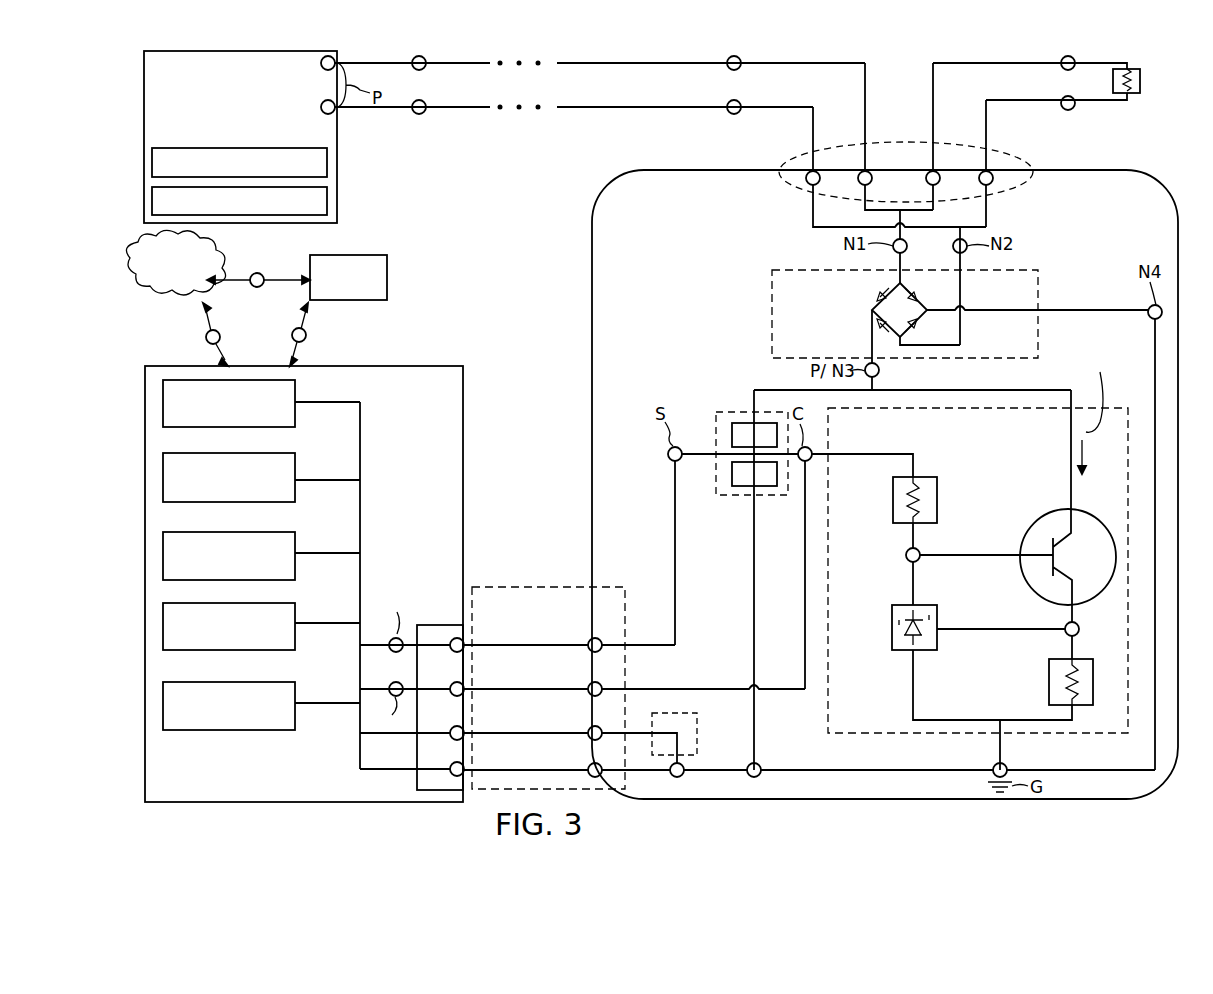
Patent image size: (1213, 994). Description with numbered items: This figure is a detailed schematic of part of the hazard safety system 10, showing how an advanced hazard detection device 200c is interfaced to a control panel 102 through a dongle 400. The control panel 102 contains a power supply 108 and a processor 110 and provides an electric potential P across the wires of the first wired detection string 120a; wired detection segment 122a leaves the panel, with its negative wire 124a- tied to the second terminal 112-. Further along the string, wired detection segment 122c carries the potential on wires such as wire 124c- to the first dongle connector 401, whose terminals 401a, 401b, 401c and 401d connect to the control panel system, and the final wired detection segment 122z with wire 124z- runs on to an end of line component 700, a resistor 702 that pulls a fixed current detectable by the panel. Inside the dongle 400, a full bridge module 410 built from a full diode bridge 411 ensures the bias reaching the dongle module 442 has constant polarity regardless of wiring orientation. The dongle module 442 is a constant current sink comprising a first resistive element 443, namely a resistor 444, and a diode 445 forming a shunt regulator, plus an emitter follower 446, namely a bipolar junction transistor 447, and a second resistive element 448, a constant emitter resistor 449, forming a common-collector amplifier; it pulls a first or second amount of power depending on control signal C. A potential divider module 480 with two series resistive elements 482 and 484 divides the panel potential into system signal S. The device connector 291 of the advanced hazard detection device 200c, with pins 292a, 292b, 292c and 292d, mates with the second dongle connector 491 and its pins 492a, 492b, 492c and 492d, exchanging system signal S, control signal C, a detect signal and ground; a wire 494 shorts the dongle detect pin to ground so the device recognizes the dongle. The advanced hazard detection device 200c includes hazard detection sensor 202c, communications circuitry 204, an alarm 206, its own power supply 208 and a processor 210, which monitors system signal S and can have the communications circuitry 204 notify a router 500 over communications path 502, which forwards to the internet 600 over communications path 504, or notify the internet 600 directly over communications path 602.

The hazard safety system 10 is at (1172, 813).
The control panel 102 is at (240, 137).
The processor 110 is at (239, 162).
The power supply 108 is at (239, 201).
The second terminal 112- is at (320, 112).
The wired detection segment 122a is at (427, 60).
The second wire 124a- is at (426, 112).
The wired detection segment 122c is at (756, 59).
The wire 124c- is at (741, 102).
The final wired detection segment 122z is at (1088, 59).
The wire 124z- is at (1085, 91).
The end of line component 700 is at (1140, 72).
The resistor 702 is at (1132, 93).
The first wired detection string 120a is at (1172, 55).
The dongle 400 is at (593, 184).
The first dongle connector 401 is at (929, 151).
The dongle connector terminal 401a is at (807, 171).
The dongle connector terminal 401b is at (863, 170).
The dongle connector terminal 401c is at (931, 170).
The dongle connector terminal 401d is at (984, 170).
The full bridge module 410 is at (925, 292).
The full diode bridge 411 is at (872, 309).
The potential divider module 480 is at (734, 569).
The resistive element 482 is at (754, 435).
The resistive element 484 is at (754, 474).
The dongle module 442 is at (984, 561).
The first resistive element 443 is at (920, 479).
The resistor 444 is at (907, 500).
The diode 445 is at (930, 608).
The emitter follower 446 is at (1084, 516).
The bipolar junction transistor 447 is at (1050, 544).
The second resistive element 448 is at (1088, 660).
The constant emitter resistor 449 is at (1060, 683).
The second dongle connector 491 is at (575, 580).
The pin 492a is at (590, 638).
The pin 492b is at (590, 684).
The dongle detect pin 492c is at (590, 728).
The ground pin 492d is at (590, 767).
The wire 494 is at (697, 734).
The advanced hazard detection device 200c is at (463, 366).
The communications circuitry 204 is at (229, 403).
The hazard detection sensor 202c is at (229, 477).
The alarm 206 is at (229, 556).
The power supply 208 is at (229, 626).
The processor 210 is at (229, 706).
The device connector 291 is at (435, 623).
The pin 292a is at (460, 641).
The pin 292b is at (460, 686).
The device detect pin 292c is at (460, 730).
The ground pin 292d is at (460, 767).
The internet 600 is at (175, 262).
The router 500 is at (348, 277).
The communications path 504 is at (260, 273).
The communications path 602 is at (220, 335).
The communications path 502 is at (306, 337).